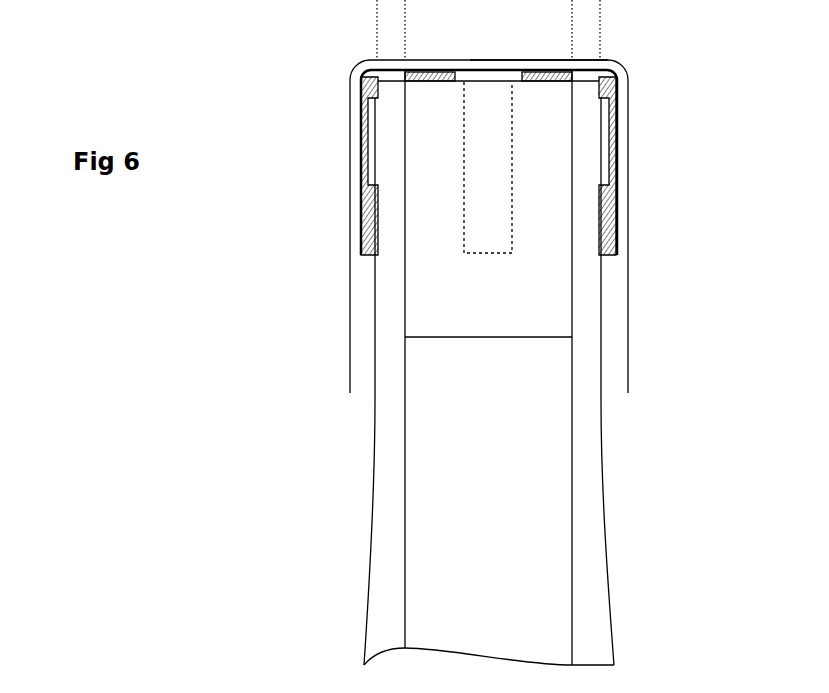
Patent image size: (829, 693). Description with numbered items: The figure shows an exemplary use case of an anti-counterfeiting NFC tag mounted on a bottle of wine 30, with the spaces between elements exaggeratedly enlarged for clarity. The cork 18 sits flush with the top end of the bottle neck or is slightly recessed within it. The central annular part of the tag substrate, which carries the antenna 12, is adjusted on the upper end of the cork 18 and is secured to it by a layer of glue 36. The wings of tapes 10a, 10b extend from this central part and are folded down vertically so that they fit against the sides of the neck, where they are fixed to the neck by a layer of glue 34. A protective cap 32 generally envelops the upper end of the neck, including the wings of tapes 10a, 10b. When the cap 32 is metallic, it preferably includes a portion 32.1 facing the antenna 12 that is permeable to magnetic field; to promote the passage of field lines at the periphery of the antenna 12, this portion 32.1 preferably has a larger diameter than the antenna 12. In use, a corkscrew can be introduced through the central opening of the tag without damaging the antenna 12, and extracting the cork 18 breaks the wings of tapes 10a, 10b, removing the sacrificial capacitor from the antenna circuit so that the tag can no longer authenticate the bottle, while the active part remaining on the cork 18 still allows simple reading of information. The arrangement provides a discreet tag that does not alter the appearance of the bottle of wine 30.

The antenna 12 is at (470, 72).
The layer of glue 36 is at (442, 72).
The portion permeable to magnetic field 32.1 is at (527, 60).
The protective cap 32 is at (628, 337).
The wing of tape 10a is at (613, 162).
The layer of glue 34 is at (362, 221).
The wing of tape 10b is at (513, 170).
The cork 18 is at (495, 302).
The bottle of wine 30 is at (392, 630).